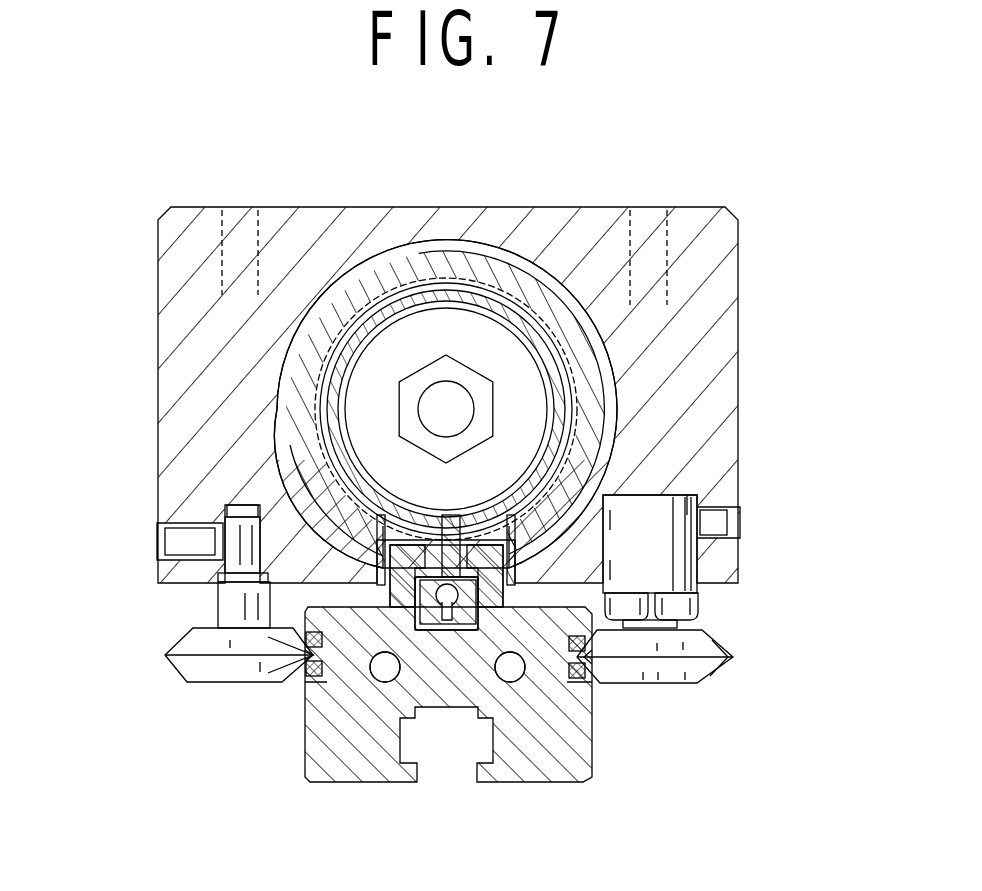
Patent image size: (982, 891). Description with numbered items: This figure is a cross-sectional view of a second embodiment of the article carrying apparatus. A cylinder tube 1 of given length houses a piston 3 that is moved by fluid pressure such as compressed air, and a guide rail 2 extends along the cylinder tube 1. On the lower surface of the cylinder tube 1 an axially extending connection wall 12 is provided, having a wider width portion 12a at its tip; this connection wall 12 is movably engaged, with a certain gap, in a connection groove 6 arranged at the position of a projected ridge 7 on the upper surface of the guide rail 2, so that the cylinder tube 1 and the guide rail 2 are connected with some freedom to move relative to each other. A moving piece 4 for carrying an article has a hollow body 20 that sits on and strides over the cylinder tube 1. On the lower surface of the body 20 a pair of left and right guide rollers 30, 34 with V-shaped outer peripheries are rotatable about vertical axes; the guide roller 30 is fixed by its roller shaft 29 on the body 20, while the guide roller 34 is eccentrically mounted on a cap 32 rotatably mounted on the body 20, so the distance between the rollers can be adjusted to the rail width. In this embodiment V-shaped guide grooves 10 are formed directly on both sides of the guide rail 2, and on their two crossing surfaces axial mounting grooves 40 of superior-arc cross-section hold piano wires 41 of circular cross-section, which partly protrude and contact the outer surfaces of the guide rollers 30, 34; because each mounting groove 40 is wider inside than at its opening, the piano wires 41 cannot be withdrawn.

The cylinder tube 1 is at (486, 293).
The guide rail 2 is at (385, 785).
The piston 3 is at (565, 350).
The moving piece 4 is at (409, 203).
The connection groove 6 is at (413, 610).
The projected ridge 7 is at (603, 463).
The V-shaped guide grooves 10 is at (305, 640).
The connection wall 12 is at (449, 560).
The wider width portion 12a is at (417, 602).
The body 20 is at (728, 334).
The roller shaft 29 is at (218, 589).
The guide roller 30 is at (192, 650).
The cap 32 is at (683, 495).
The guide roller 34 is at (693, 690).
The mounting grooves 40 is at (325, 678).
The piano wires 41 is at (318, 662).